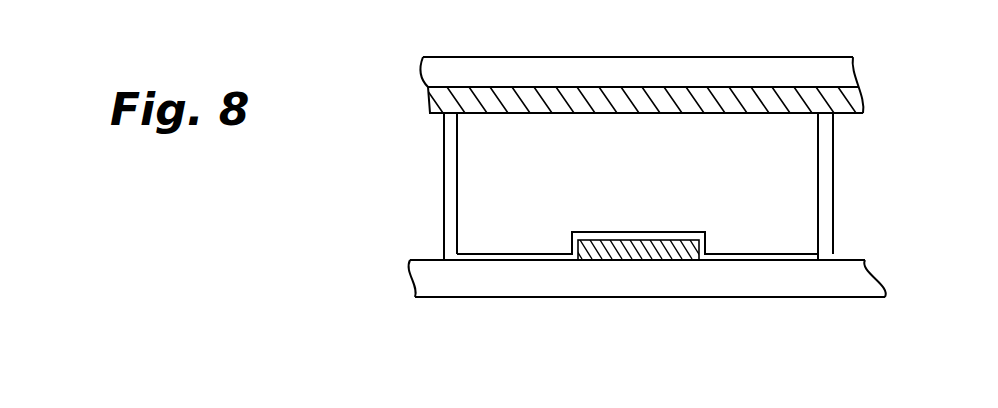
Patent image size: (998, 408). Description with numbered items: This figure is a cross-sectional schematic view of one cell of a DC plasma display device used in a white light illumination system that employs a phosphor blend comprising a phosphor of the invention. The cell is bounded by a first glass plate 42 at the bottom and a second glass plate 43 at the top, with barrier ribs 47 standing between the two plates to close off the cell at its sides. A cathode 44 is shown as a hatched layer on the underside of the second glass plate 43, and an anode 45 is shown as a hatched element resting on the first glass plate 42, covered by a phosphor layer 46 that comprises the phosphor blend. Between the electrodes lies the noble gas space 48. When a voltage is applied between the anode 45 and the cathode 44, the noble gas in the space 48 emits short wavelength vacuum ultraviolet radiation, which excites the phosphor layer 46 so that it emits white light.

The first glass plate 42 is at (840, 282).
The second glass plate 43 is at (838, 69).
The cathode 44 is at (852, 106).
The anode 45 is at (583, 252).
The phosphor layer 46 is at (786, 253).
The barrier ribs 47 is at (443, 151).
The noble gas space 48 is at (657, 167).